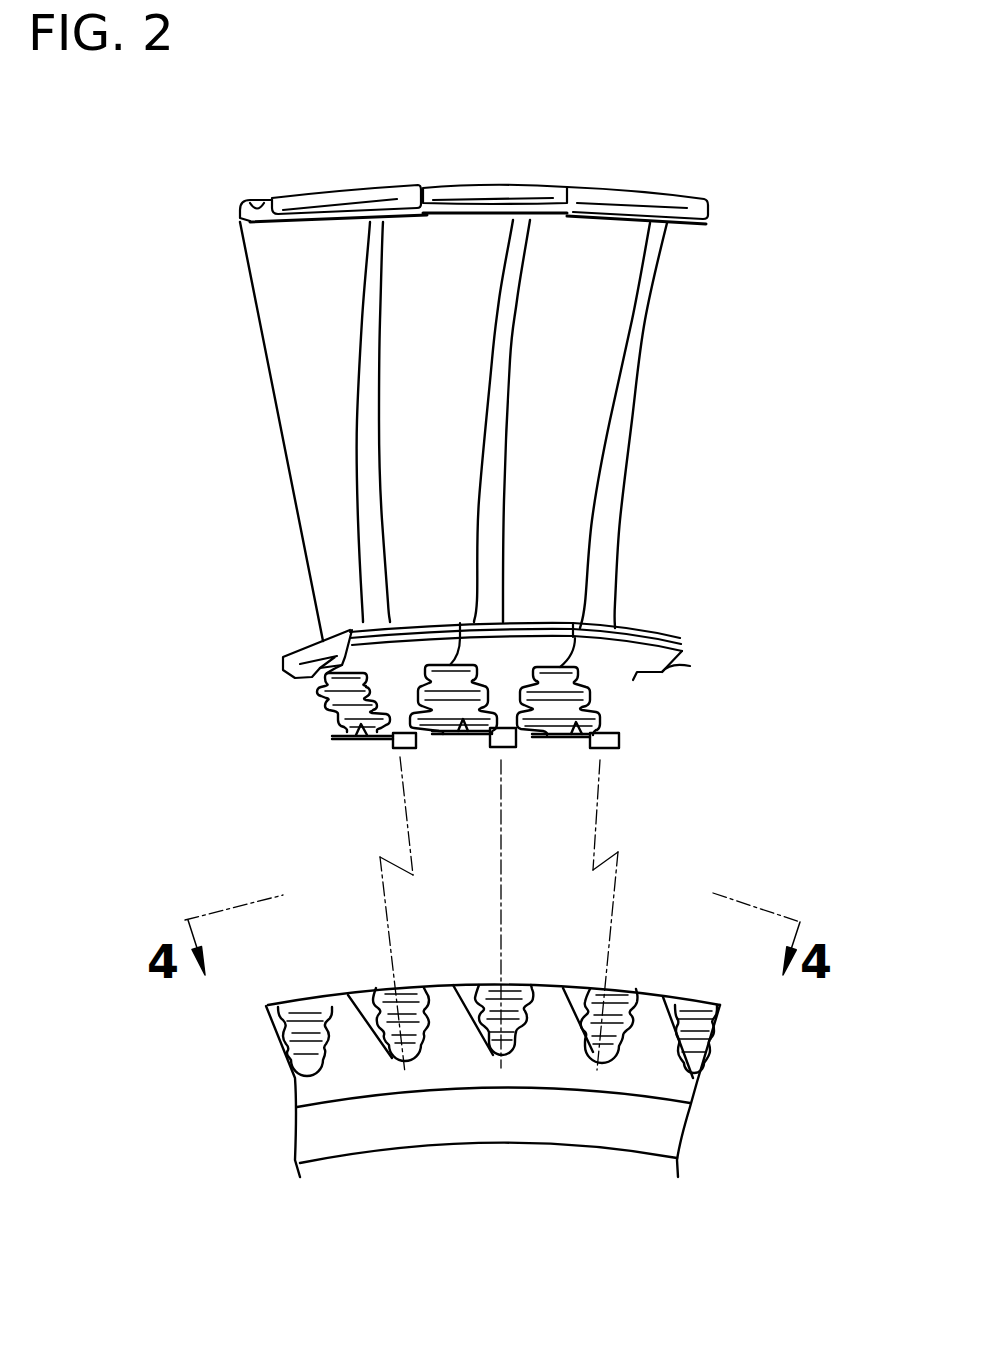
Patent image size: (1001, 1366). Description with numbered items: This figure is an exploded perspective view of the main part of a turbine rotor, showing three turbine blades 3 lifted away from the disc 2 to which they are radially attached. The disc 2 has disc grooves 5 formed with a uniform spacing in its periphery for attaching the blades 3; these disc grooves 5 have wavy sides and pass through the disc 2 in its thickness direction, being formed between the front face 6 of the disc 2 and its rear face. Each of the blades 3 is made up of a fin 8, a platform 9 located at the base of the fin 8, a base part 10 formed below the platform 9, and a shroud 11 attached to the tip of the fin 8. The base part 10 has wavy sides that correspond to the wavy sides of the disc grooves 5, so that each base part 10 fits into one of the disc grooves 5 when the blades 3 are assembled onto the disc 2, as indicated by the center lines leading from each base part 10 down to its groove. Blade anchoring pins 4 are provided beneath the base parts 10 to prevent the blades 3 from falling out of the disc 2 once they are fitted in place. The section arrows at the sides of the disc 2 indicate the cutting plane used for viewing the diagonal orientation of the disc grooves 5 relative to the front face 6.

The disc 2 is at (703, 1087).
The turbine blades 3 is at (830, 117).
The blade anchoring pins 4 is at (370, 757).
The disc grooves 5 is at (297, 1007).
The front face 6 is at (647, 1073).
The fin 8 is at (640, 380).
The platform 9 is at (675, 640).
The base part 10 is at (642, 685).
The shroud 11 is at (310, 188).